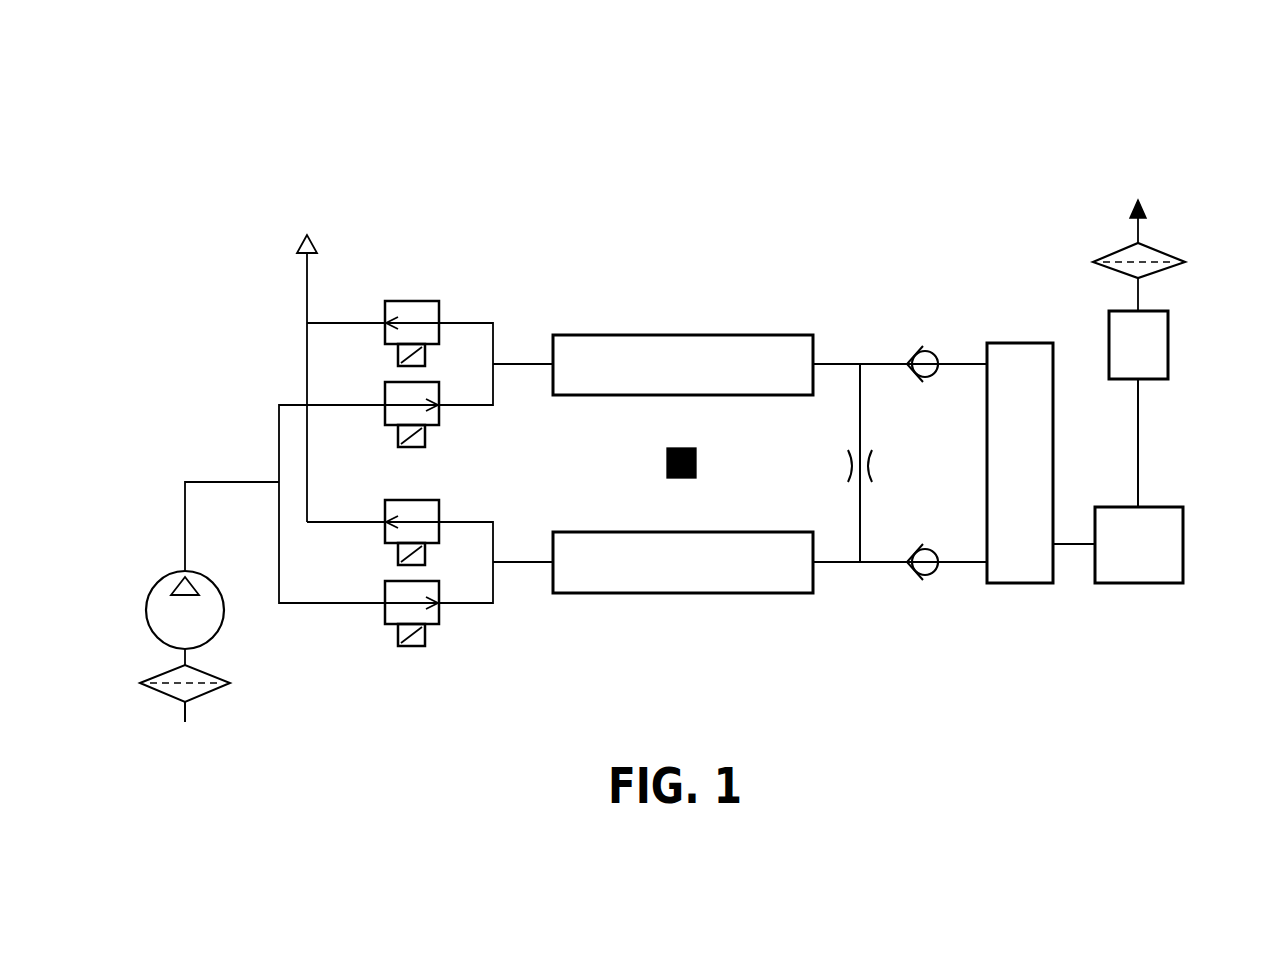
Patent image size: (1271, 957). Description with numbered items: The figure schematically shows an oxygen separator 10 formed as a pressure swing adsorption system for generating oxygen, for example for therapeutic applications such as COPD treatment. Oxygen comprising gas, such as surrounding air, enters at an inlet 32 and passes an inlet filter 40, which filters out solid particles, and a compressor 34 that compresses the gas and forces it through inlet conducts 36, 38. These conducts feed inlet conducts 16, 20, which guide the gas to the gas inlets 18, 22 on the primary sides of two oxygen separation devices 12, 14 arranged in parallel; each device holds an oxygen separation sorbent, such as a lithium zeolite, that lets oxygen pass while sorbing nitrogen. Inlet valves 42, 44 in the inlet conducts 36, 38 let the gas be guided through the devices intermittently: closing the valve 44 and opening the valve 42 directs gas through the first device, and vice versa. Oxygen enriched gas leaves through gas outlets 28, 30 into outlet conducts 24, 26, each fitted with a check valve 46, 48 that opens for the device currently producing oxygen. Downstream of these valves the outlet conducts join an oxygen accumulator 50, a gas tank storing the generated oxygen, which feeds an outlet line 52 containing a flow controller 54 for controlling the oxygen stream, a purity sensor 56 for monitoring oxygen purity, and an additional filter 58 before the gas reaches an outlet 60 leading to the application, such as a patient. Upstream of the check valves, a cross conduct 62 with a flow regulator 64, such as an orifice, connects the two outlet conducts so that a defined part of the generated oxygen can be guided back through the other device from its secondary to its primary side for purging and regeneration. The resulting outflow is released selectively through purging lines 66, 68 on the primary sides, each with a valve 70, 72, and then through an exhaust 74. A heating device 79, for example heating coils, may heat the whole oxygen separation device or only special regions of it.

The oxygen separator 10 is at (200, 172).
The oxygen separation device 12 is at (688, 352).
The oxygen separation device 14 is at (680, 575).
The inlet conduct 16 is at (518, 366).
The gas inlet 18 is at (550, 360).
The inlet conduct 20 is at (520, 560).
The gas inlet 22 is at (550, 565).
The outlet conduct 24 is at (873, 362).
The outlet conduct 26 is at (873, 565).
The gas outlet 28 is at (816, 362).
The gas outlet 30 is at (818, 565).
The inlet 32 is at (183, 715).
The compressor 34 is at (146, 610).
The inlet conduct 36 is at (325, 403).
The inlet conduct 38 is at (325, 601).
The inlet filter 40 is at (150, 680).
The inlet valve 42 is at (441, 414).
The inlet valve 44 is at (413, 647).
The valve 46 is at (918, 348).
The valve 48 is at (918, 578).
The oxygen accumulator 50 is at (1020, 342).
The outlet line 52 is at (1139, 435).
The flow controller 54 is at (1184, 545).
The purity sensor 56 is at (1169, 345).
The filter 58 is at (1158, 252).
The outlet 60 is at (1148, 212).
The cross conduct 62 is at (862, 408).
The flow regulator 64 is at (873, 465).
The purging line 66 is at (328, 320).
The purging line 68 is at (325, 520).
The valve 70 is at (415, 300).
The valve 72 is at (441, 512).
The exhaust 74 is at (298, 245).
The heating device 79 is at (728, 452).